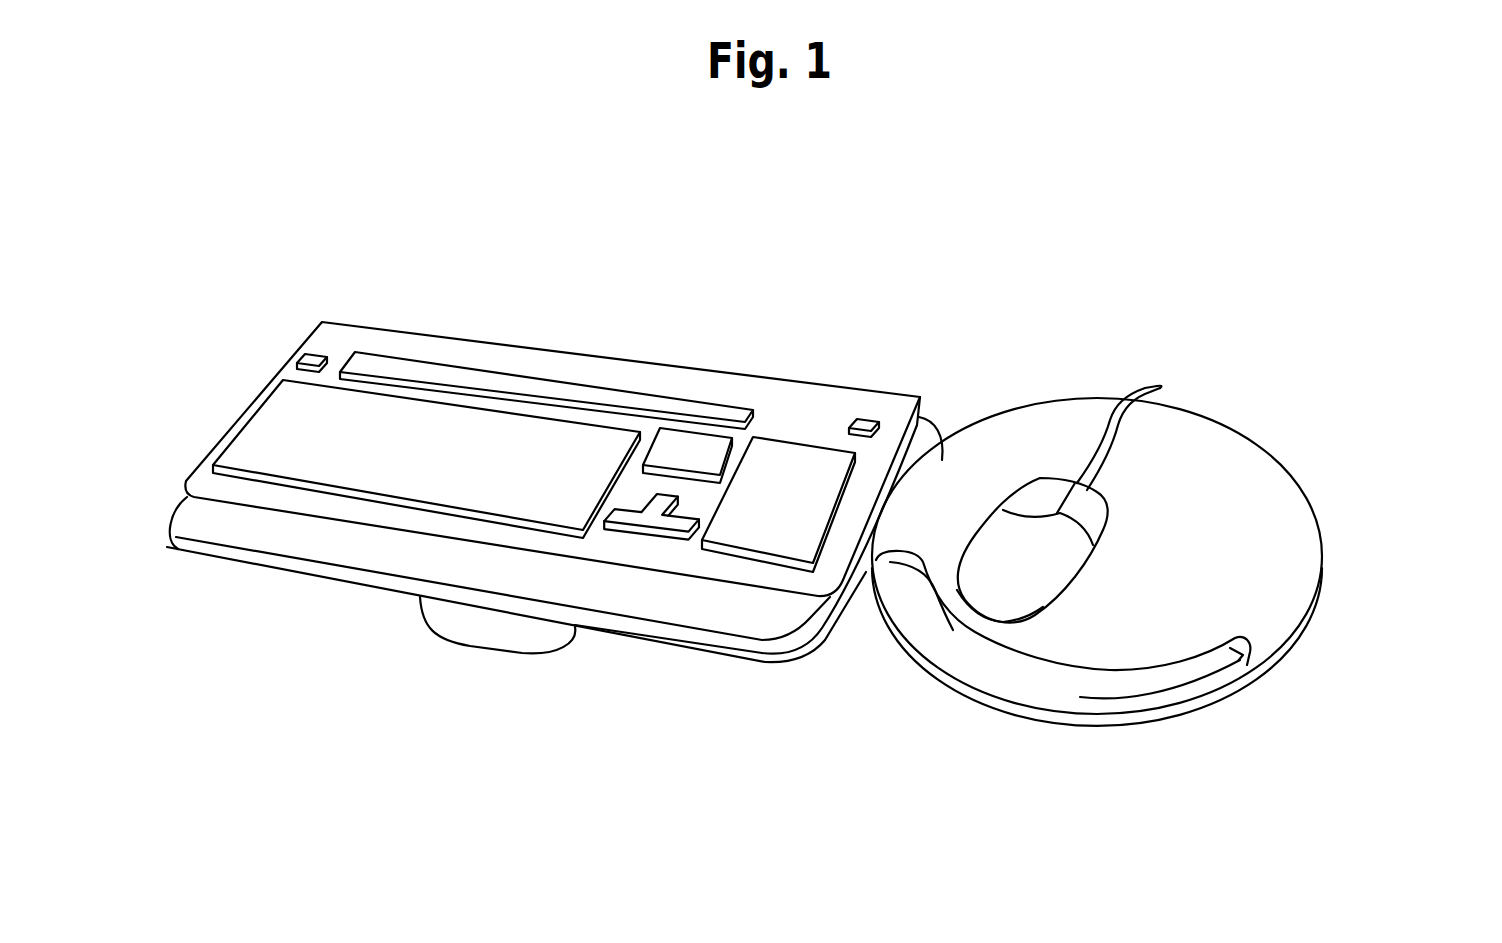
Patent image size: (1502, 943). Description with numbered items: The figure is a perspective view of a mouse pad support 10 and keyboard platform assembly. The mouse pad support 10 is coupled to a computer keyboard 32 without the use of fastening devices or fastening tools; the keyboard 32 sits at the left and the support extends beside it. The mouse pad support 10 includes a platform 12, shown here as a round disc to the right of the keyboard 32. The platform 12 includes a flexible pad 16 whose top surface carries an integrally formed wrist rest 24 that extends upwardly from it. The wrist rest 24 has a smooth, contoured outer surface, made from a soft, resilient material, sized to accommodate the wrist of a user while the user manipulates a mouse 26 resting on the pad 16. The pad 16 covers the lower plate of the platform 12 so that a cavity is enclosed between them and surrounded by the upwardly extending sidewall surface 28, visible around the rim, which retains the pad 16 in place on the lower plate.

The mouse pad support 10 is at (1071, 380).
The platform 12 is at (1282, 462).
The flexible pad 16 is at (1213, 517).
The wrist rest 24 is at (1221, 680).
The mouse 26 is at (1083, 573).
The sidewall surface 28 is at (1308, 621).
The computer keyboard 32 is at (771, 663).